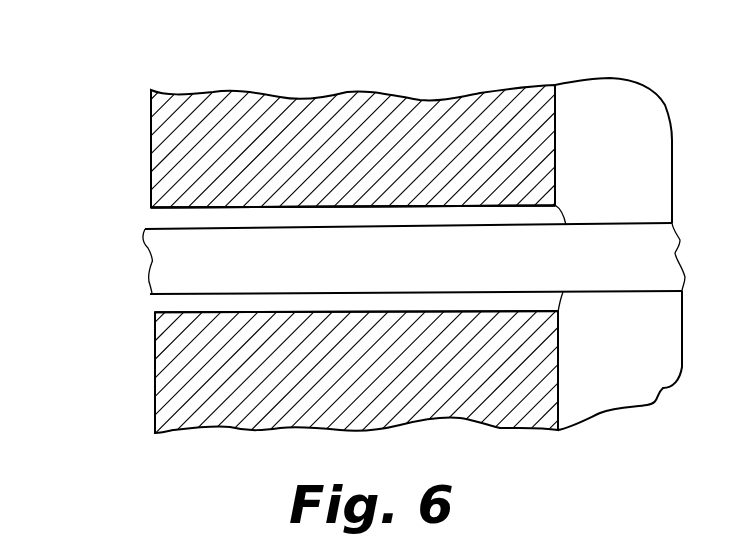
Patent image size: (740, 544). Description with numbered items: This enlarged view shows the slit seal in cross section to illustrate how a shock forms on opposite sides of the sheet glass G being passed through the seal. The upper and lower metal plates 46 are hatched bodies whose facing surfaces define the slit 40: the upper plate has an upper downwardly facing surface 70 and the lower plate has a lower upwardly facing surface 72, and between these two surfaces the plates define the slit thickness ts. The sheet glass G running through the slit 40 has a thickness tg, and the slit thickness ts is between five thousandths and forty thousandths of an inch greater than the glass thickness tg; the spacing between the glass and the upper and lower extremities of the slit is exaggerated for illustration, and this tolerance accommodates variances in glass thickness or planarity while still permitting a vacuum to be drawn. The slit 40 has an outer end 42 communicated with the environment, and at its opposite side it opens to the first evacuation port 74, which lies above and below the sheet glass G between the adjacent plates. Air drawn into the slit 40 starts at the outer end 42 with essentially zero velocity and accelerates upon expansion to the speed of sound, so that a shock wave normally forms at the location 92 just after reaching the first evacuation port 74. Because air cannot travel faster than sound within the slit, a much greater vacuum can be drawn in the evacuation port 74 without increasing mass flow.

The slit 40 is at (235, 214).
The outer end 42 is at (153, 208).
The metal plates 46 is at (162, 133).
The upper downwardly facing surface 70 is at (477, 206).
The lower upwardly facing surface 72 is at (470, 312).
The first evacuation port 74 is at (636, 188).
The shock wave location 92 is at (565, 225).
The sheet glass G is at (155, 296).
The slit thickness ts is at (260, 207).
The sheet glass thickness tg is at (362, 227).